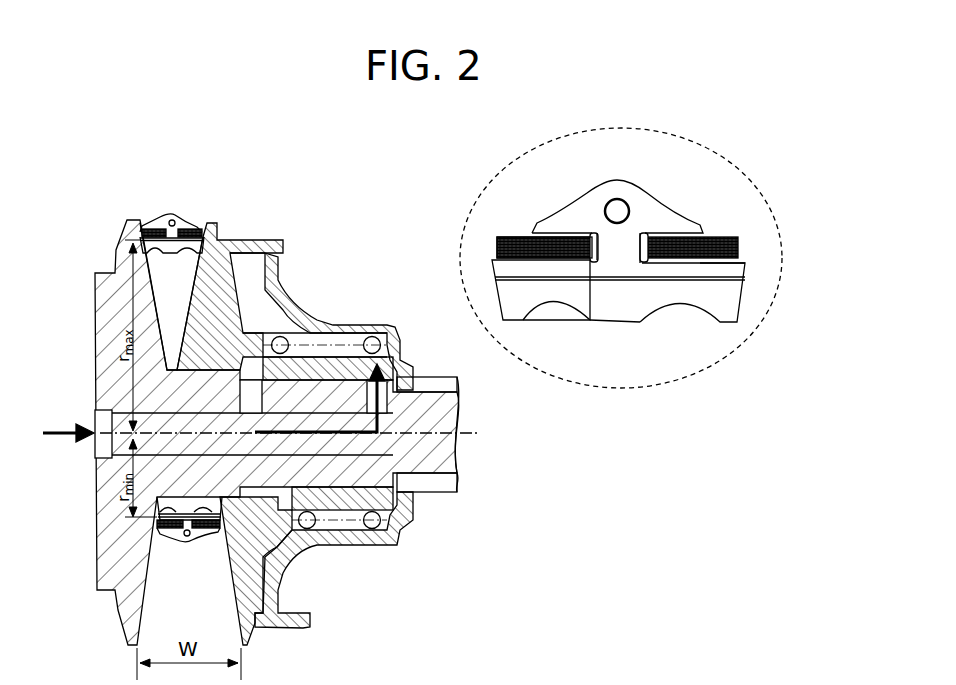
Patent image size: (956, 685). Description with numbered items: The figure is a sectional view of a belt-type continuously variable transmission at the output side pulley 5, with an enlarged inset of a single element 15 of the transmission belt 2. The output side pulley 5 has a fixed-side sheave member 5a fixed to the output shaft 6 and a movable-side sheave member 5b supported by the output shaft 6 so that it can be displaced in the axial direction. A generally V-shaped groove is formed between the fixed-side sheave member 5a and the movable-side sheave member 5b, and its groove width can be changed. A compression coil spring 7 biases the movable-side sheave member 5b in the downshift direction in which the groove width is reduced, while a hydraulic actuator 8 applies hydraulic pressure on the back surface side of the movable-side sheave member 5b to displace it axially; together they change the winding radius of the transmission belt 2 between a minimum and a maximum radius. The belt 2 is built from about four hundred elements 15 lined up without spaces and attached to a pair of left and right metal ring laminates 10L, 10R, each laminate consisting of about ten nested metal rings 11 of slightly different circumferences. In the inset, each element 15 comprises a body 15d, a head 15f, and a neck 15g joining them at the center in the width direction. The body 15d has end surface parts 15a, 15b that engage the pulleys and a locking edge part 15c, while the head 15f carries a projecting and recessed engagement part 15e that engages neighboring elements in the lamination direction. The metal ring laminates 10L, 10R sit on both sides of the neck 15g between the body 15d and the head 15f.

The transmission belt 2 is at (185, 210).
The output side pulley 5 is at (297, 211).
The fixed-side sheave member 5a is at (117, 256).
The movable-side sheave member 5b is at (215, 248).
The output shaft 6 is at (438, 463).
The compression coil spring 7 is at (283, 340).
The hydraulic actuator 8 is at (257, 296).
The left metal ring laminate 10L is at (141, 229).
The right metal ring laminate 10R is at (202, 229).
The metal ring 11 is at (497, 248).
The element 15 is at (170, 208).
The end surface part 15a is at (497, 300).
The end surface part 15b is at (743, 302).
The locking edge part 15c is at (537, 280).
The body 15d is at (743, 268).
The projecting and recessed engagement part 15e is at (604, 203).
The head 15f is at (620, 182).
The neck 15g is at (623, 255).